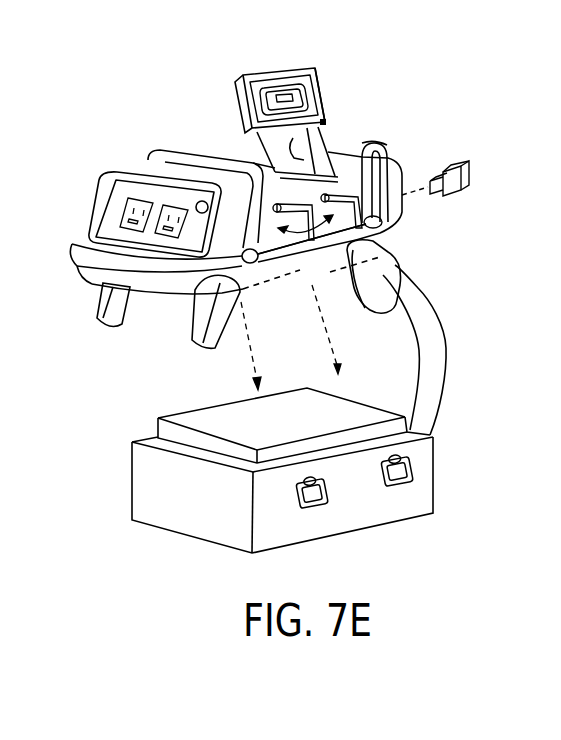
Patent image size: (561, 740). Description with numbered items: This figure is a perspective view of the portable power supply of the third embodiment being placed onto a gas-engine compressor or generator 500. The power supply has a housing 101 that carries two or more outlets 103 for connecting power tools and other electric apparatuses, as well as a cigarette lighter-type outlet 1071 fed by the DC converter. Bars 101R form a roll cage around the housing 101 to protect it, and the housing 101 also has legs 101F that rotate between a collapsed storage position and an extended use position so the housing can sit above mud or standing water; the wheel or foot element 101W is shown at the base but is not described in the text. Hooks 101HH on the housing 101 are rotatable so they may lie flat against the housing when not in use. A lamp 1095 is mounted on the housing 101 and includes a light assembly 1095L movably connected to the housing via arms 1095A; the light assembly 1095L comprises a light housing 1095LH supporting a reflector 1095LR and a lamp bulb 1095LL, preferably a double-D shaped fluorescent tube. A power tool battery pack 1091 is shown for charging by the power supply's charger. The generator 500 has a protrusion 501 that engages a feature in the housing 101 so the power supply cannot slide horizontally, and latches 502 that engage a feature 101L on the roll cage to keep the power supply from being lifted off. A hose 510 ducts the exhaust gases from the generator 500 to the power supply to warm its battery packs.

The housing 101 is at (92, 278).
The wheel / leg 101W is at (157, 290).
The bars 101R is at (260, 220).
The feature 101L is at (392, 228).
The hooks 101HH is at (396, 203).
The legs 101F is at (383, 277).
The outlets 103 is at (115, 218).
The cigarette lighter-type outlet 1071 is at (200, 202).
The power tool battery pack 1091 is at (470, 170).
The lamp 1095 is at (326, 123).
The arms 1095A is at (380, 144).
The light assembly 1095L is at (318, 74).
The light housing 1095LH is at (236, 88).
The reflector 1095LR is at (316, 111).
The lamp bulb 1095LL is at (275, 88).
The generator 500 is at (420, 503).
The protrusion 501 is at (342, 405).
The latches 502 is at (330, 494).
The hose 510 is at (433, 360).